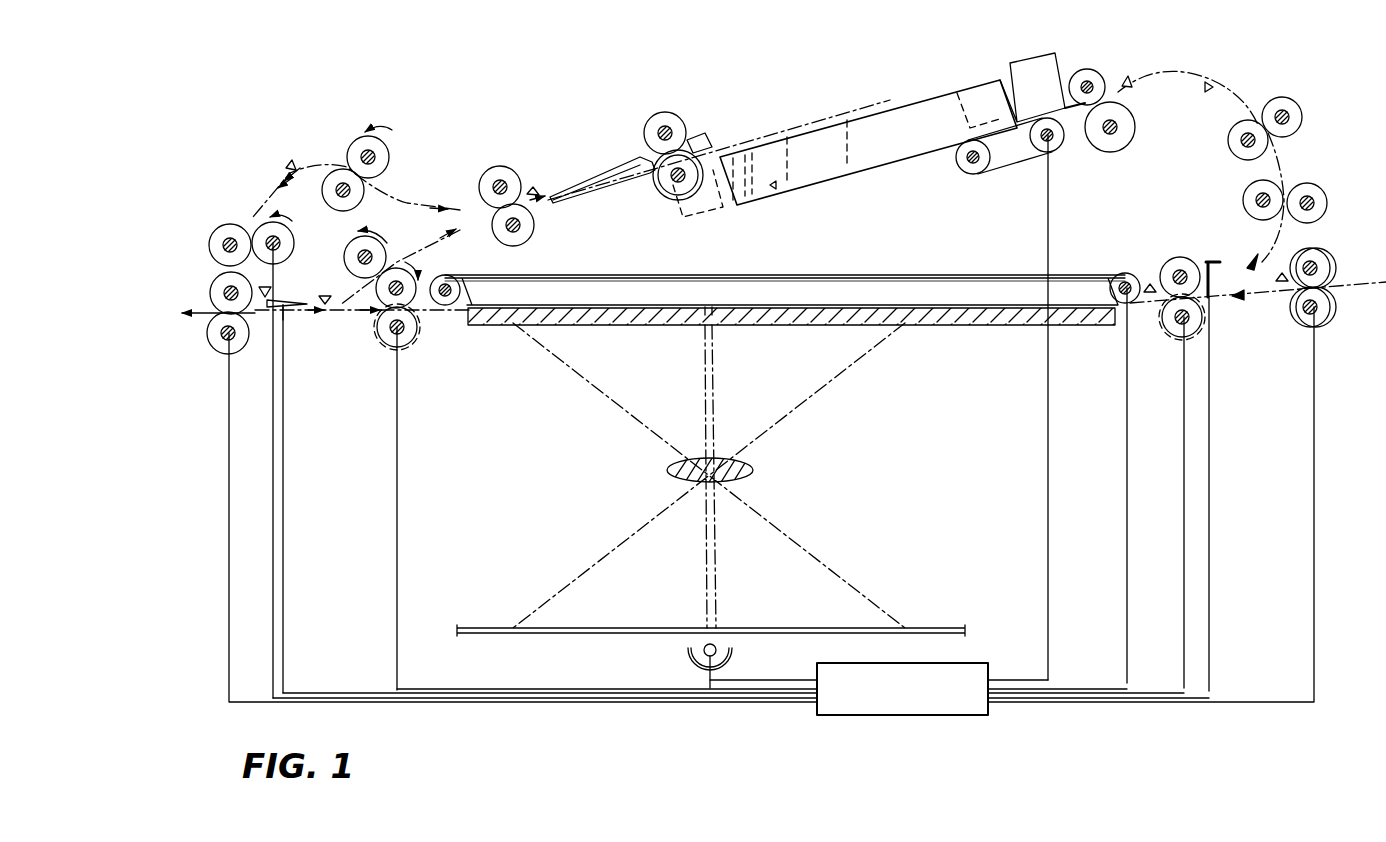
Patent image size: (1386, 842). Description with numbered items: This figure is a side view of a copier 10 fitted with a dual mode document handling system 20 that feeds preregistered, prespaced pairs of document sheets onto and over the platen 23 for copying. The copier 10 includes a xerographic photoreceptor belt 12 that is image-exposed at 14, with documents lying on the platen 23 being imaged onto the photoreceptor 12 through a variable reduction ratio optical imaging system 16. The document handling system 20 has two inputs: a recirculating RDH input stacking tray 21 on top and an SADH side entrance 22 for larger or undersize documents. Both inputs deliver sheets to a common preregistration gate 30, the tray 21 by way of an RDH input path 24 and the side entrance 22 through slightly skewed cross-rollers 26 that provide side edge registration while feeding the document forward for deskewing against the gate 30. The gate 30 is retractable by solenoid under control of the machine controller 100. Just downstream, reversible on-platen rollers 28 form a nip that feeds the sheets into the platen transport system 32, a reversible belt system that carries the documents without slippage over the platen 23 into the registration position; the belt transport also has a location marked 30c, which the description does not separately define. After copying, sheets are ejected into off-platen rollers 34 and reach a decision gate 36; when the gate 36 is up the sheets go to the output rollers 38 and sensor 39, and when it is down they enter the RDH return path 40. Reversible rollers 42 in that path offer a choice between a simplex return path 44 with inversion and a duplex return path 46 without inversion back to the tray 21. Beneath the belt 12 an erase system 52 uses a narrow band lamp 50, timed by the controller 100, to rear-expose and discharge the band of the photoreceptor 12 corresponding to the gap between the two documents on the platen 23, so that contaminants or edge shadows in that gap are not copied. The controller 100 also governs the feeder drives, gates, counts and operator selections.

The copier 10 is at (556, 407).
The photoreceptor belt 12 is at (470, 630).
The image exposing station 14 is at (695, 596).
The optical imaging system 16 is at (790, 483).
The document handling system 20 is at (582, 136).
The RDH input stacking tray 21 is at (917, 155).
The SADH side entrance 22 is at (1328, 296).
The platen 23 is at (945, 326).
The RDH input path 24 is at (1262, 252).
The skewed cross-rollers 26 is at (1320, 262).
The on-platen rollers 28 is at (1165, 263).
The preregistration gate 30 is at (1232, 270).
The belt center 30c is at (708, 307).
The platen transport system 32 is at (1014, 257).
The off-platen rollers 34 is at (388, 306).
The decision gate 36 is at (284, 312).
The output rollers 38 is at (222, 330).
The sensor 39 is at (210, 292).
The RDH return path 40 is at (280, 283).
The reversible rollers 42 is at (266, 224).
The simplex return path 44 is at (405, 200).
The duplex return path 46 is at (423, 248).
The lamp 50 is at (690, 672).
The interdocument erase system 52 is at (686, 680).
The machine controller 100 is at (984, 667).